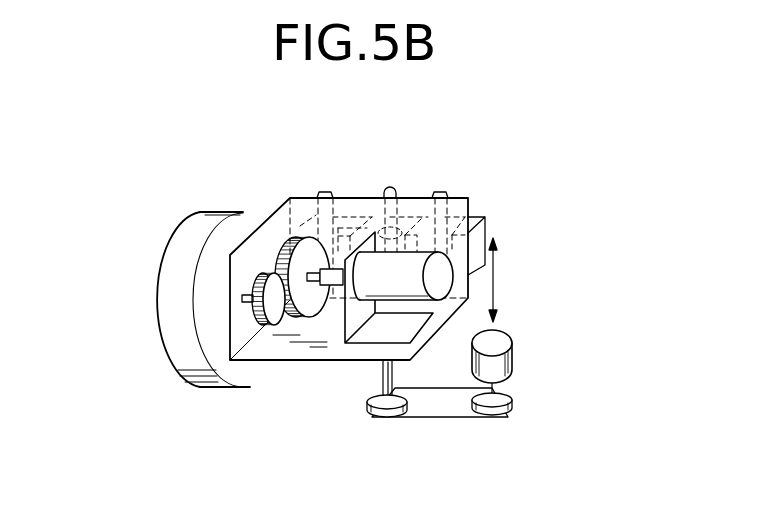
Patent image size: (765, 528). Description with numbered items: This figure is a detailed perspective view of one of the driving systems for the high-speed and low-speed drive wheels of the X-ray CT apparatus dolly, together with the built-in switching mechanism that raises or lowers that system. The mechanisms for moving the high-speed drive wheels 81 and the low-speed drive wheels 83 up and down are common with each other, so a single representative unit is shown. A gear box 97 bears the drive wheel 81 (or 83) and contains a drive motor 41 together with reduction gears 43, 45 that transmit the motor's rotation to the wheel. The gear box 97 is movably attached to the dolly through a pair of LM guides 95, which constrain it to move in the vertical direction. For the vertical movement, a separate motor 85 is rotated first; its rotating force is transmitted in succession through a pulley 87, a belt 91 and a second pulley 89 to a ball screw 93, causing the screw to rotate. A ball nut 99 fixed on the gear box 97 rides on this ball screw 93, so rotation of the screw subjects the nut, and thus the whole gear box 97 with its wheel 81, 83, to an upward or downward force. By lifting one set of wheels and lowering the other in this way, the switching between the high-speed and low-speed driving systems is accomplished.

The drive motor 41 is at (440, 298).
The reduction gear 43 is at (284, 238).
The reduction gear 45 is at (257, 282).
The high-speed drive wheel 81 is at (156, 309).
The low-speed drive wheel 83 is at (205, 347).
The motor 85 is at (513, 357).
The pulley 87 is at (507, 420).
The pulley 89 is at (375, 420).
The belt 91 is at (443, 420).
The ball screw 93 is at (382, 378).
The LM guide 95 is at (324, 191).
The gear box 97 is at (481, 194).
The ball nut 99 is at (406, 223).